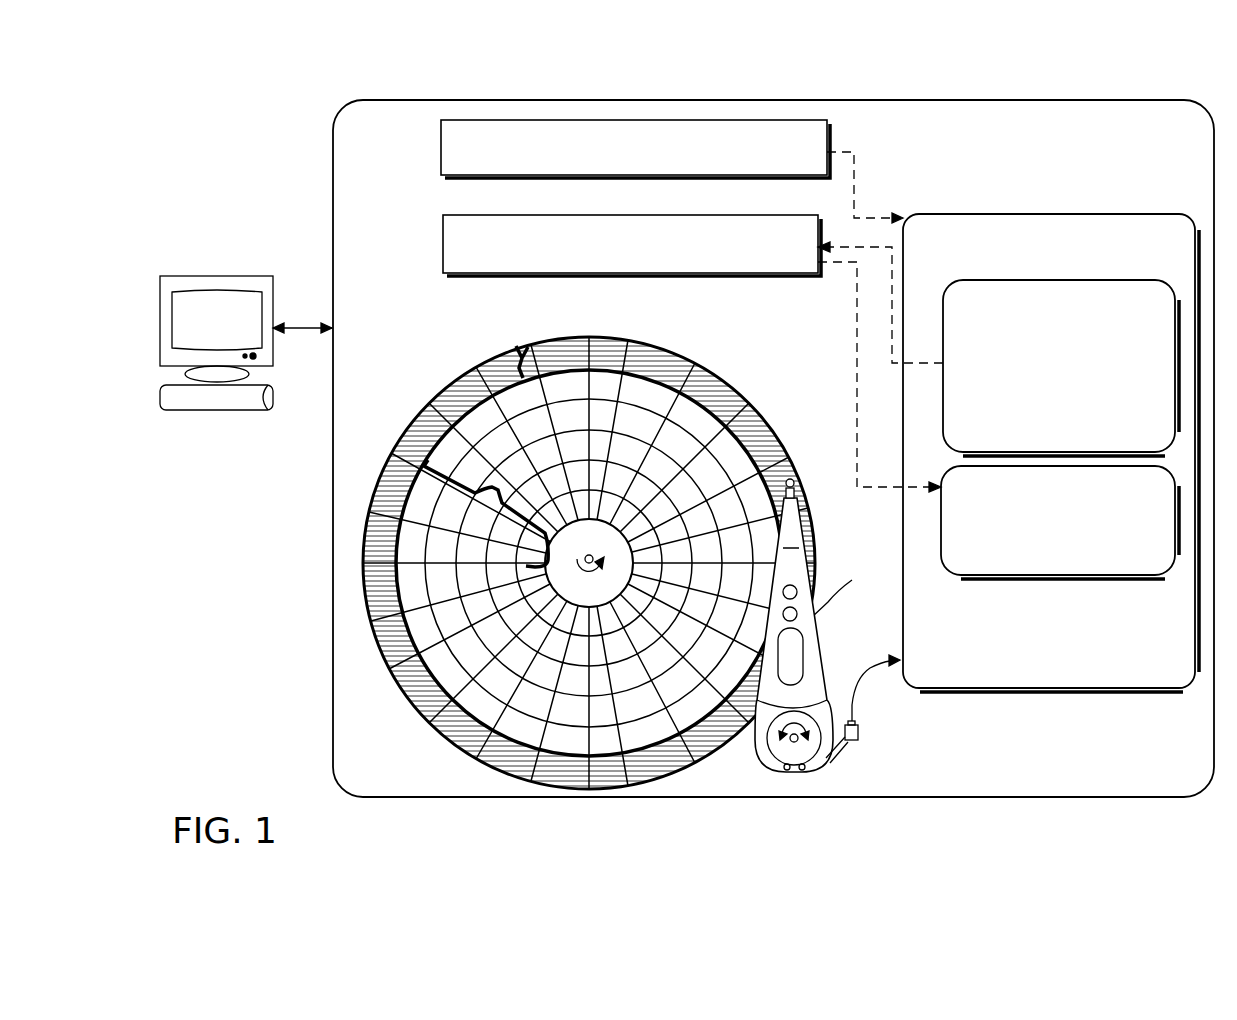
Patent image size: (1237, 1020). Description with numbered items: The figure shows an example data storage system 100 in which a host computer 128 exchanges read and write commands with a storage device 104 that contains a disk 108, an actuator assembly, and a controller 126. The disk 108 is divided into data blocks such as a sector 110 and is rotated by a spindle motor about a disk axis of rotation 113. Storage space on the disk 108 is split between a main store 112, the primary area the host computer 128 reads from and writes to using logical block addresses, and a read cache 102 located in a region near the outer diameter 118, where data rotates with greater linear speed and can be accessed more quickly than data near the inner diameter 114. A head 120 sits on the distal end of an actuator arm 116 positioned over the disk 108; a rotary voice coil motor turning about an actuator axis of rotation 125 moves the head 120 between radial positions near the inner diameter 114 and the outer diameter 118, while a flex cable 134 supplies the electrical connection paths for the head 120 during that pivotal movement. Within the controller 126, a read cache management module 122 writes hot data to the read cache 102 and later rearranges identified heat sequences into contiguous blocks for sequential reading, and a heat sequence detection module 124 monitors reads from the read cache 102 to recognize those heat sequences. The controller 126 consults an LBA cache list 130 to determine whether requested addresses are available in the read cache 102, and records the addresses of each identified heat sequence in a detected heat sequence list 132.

The data storage system 100 is at (256, 123).
The read cache 102 is at (522, 347).
The storage device 104 is at (380, 149).
The disk 108 is at (697, 363).
The sector 110 is at (708, 430).
The main store 112 is at (437, 434).
The disk axis of rotation 113 is at (589, 571).
The inner diameter 114 is at (524, 566).
The actuator arm 116 is at (795, 573).
The outer diameter 118 is at (444, 392).
The head 120 is at (802, 487).
The read cache management module 122 is at (1044, 553).
The heat sequence detection module 124 is at (1045, 387).
The actuator axis of rotation 125 is at (770, 744).
The controller 126 is at (1034, 262).
The host computer 128 is at (200, 276).
The LBA cache list 130 is at (620, 166).
The detected heat sequence list 132 is at (616, 261).
The flex cable 134 is at (833, 768).